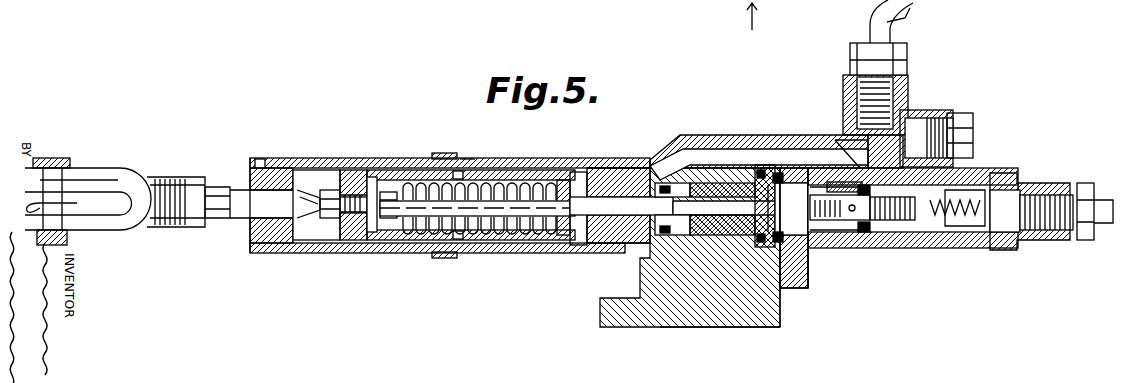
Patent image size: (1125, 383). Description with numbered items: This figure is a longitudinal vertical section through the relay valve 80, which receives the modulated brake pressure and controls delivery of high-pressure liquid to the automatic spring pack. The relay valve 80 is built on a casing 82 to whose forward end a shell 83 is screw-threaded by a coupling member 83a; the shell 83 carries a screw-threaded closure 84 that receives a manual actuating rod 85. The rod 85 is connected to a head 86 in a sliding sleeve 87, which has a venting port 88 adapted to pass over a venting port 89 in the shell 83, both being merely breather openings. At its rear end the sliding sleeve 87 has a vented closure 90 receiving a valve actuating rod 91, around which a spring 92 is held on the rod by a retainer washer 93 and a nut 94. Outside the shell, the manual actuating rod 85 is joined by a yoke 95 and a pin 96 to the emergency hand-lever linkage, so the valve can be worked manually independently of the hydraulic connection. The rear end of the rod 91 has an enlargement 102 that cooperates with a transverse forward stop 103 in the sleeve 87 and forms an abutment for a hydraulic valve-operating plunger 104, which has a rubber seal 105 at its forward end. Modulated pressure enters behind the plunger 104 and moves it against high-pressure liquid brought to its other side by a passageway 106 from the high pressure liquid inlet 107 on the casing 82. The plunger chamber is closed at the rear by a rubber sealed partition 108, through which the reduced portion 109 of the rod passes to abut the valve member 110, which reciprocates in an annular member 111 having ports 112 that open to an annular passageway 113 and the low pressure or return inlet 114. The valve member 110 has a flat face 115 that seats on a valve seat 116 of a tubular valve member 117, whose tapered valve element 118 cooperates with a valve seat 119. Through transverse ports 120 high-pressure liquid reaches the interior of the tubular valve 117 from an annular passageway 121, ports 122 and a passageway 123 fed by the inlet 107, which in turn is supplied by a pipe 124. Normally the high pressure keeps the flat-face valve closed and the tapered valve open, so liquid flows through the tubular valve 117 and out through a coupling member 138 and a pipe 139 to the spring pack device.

The relay valve 80 is at (603, 334).
The casing 82 is at (672, 322).
The shell 83 is at (515, 162).
The coupling member 83a is at (620, 255).
The screw-threaded closure 84 is at (256, 240).
The manual actuating rod 85 is at (243, 190).
The head 86 is at (347, 170).
The sliding sleeve 87 is at (392, 170).
The venting port 88 is at (470, 160).
The venting port 89 is at (443, 153).
The vented closure 90 is at (562, 236).
The valve actuating rod 91 is at (500, 232).
The spring 92 is at (517, 216).
The retainer washer 93 is at (398, 253).
The nut 94 is at (372, 247).
The yoke 95 is at (122, 176).
The pin 96 is at (55, 166).
The enlargement 102 is at (615, 195).
The transverse forward stop 103 is at (585, 190).
The hydraulic valve-operating plunger 104 is at (715, 235).
The rubber seal 105 is at (668, 233).
The passageway 106 is at (697, 148).
The high pressure liquid inlet 107 is at (908, 82).
The rubber sealed partition 108 is at (765, 247).
The reduced portion 109 is at (767, 208).
The valve member 110 is at (792, 290).
The annular member 111 is at (803, 255).
The ports 112 is at (832, 182).
The annular passageway 113 is at (778, 173).
The low pressure or return inlet 114 is at (818, 237).
The flat face 115 is at (766, 185).
The valve seat 116 is at (812, 185).
The tubular valve member 117 is at (940, 240).
The tapered valve element 118 is at (905, 240).
The valve seat 119 is at (868, 236).
The transverse ports 120 is at (857, 138).
The annular passageway 121 is at (915, 112).
The ports 122 is at (968, 145).
The passageway 123 is at (970, 236).
The pipe 124 is at (905, 25).
The coupling member 138 is at (1030, 183).
The pipe 139 is at (1090, 240).